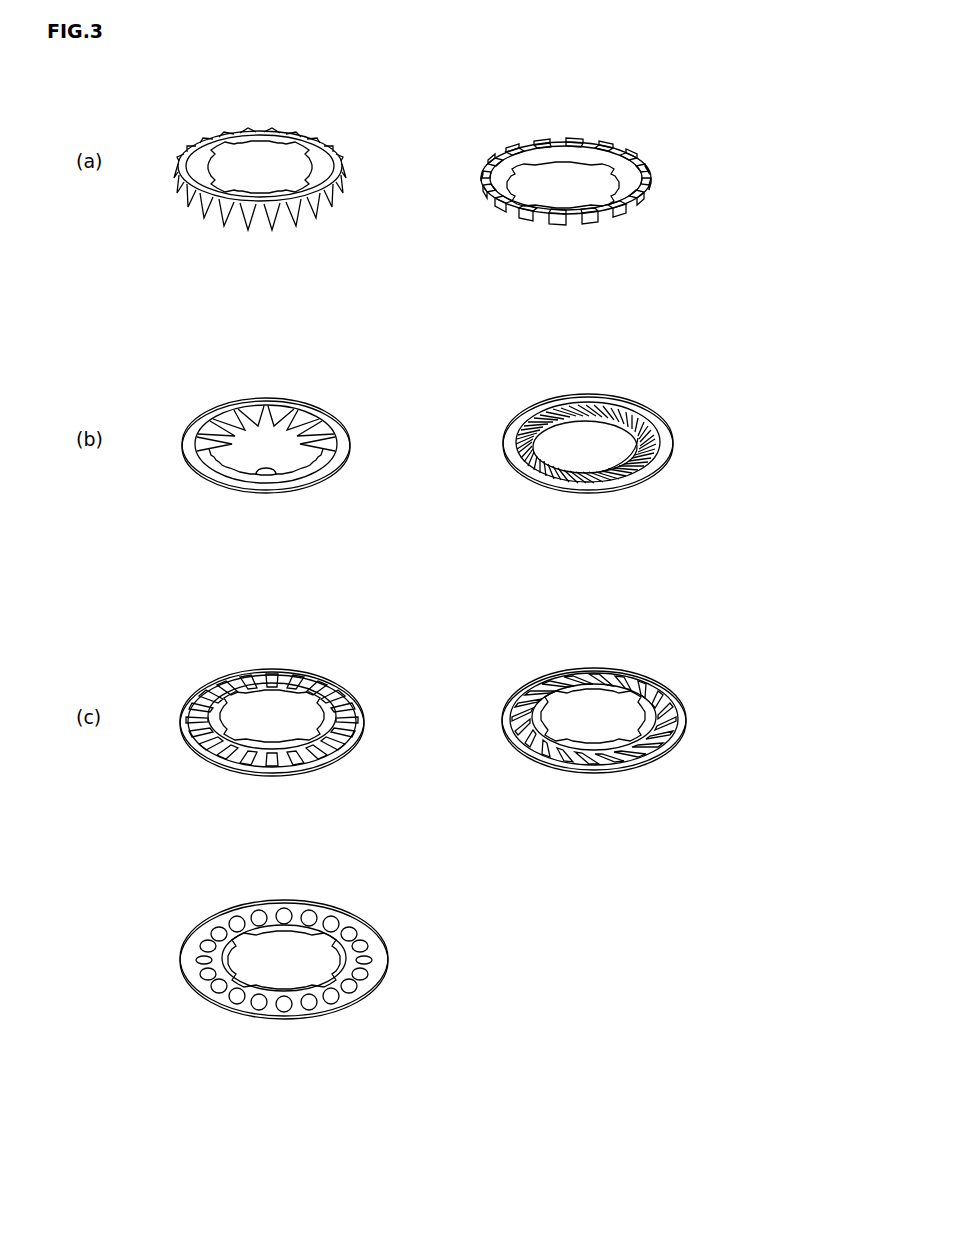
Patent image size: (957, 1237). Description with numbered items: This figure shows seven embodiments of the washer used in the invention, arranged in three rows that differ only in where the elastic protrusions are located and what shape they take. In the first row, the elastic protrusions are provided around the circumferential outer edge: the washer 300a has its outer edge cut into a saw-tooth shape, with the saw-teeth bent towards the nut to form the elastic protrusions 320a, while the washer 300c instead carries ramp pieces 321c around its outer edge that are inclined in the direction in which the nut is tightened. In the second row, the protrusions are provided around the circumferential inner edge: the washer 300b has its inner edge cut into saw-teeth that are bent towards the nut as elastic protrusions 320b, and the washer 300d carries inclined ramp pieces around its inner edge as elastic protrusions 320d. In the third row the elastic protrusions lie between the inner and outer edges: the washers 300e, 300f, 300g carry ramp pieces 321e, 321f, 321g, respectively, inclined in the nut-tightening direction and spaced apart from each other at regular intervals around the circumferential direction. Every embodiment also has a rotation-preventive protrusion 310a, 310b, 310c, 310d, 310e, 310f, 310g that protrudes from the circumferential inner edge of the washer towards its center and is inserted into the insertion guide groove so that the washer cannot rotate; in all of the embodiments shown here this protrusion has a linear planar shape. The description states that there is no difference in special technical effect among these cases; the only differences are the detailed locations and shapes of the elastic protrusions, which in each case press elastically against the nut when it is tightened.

The washer 300a is at (270, 158).
The rotation-preventive protrusion 310a is at (215, 161).
The elastic protrusions 320a is at (313, 220).
The washer 300c is at (604, 170).
The rotation-preventive protrusion 310c is at (543, 150).
The ramp pieces 321c is at (605, 225).
The washer 300b is at (311, 414).
The rotation-preventive protrusion 310b is at (255, 403).
The elastic protrusions 320b is at (300, 407).
The washer 300d is at (634, 433).
The rotation-preventive protrusion 310d is at (570, 410).
The elastic protrusions 320d is at (632, 480).
The washer 300e is at (306, 689).
The rotation-preventive protrusion 310e is at (252, 672).
The ramp pieces 321e is at (330, 752).
The washer 300f is at (640, 706).
The rotation-preventive protrusion 310f is at (582, 688).
The ramp pieces 321f is at (615, 772).
The washer 300g is at (323, 945).
The rotation-preventive protrusion 310g is at (250, 922).
The ramp pieces 321g is at (335, 1007).